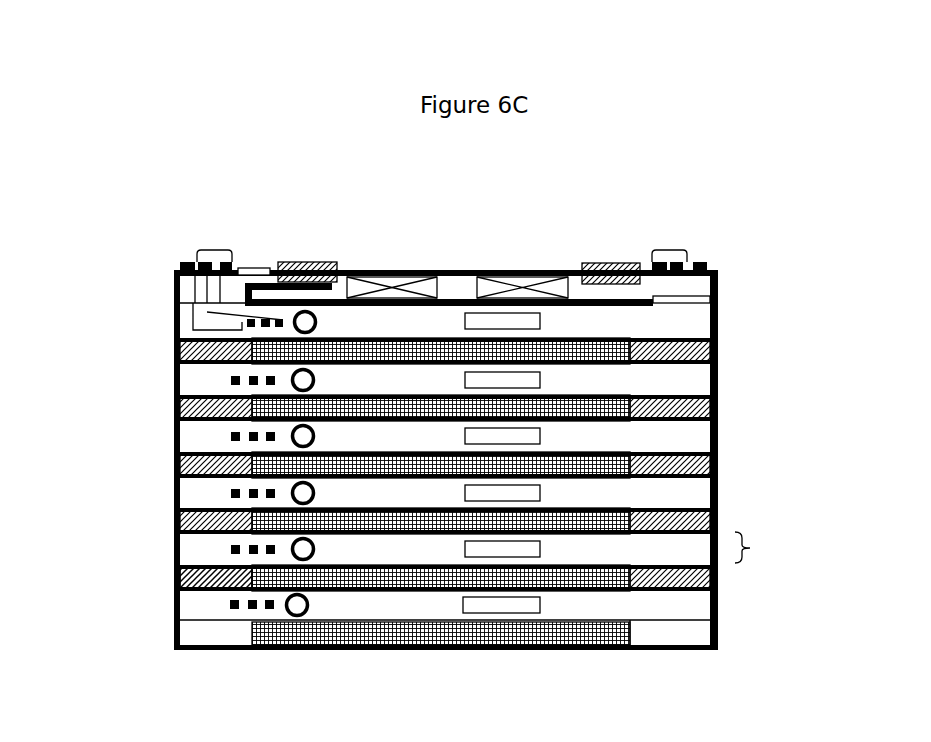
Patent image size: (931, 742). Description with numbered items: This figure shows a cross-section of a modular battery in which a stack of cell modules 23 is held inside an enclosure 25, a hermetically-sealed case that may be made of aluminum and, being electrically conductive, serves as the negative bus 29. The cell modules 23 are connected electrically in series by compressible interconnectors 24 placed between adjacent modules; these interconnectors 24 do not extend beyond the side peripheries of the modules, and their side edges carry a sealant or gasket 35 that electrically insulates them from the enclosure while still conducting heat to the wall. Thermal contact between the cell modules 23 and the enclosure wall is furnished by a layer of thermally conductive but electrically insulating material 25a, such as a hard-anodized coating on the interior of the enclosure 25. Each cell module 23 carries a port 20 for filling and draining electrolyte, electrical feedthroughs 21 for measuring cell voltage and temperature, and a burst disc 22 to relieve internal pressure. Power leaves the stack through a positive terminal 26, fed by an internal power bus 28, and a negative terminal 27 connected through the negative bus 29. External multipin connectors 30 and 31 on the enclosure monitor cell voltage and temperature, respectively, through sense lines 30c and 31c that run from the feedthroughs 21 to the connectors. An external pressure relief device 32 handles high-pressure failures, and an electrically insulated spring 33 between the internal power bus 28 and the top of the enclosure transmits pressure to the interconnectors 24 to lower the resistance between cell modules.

The port 20 is at (312, 607).
The electrical feedthroughs 21 is at (233, 608).
The burst disc 22 is at (500, 602).
The cell module 23 is at (765, 549).
The compressible interconnector 24 is at (613, 408).
The enclosure 25 is at (175, 577).
The thermally conductive electrically insulating material 25a is at (175, 503).
The positive terminal 26 is at (308, 262).
The negative terminal 27 is at (615, 262).
The internal power bus 28 is at (653, 297).
The negative bus 29 is at (522, 270).
The multipin connector 30 is at (180, 261).
The sense lines 30c is at (195, 288).
The multipin connector 31 is at (213, 250).
The sense lines 31c is at (200, 306).
The external pressure relief device 32 is at (257, 262).
The spring 33 is at (500, 288).
The sealant or gasket 35 is at (203, 405).